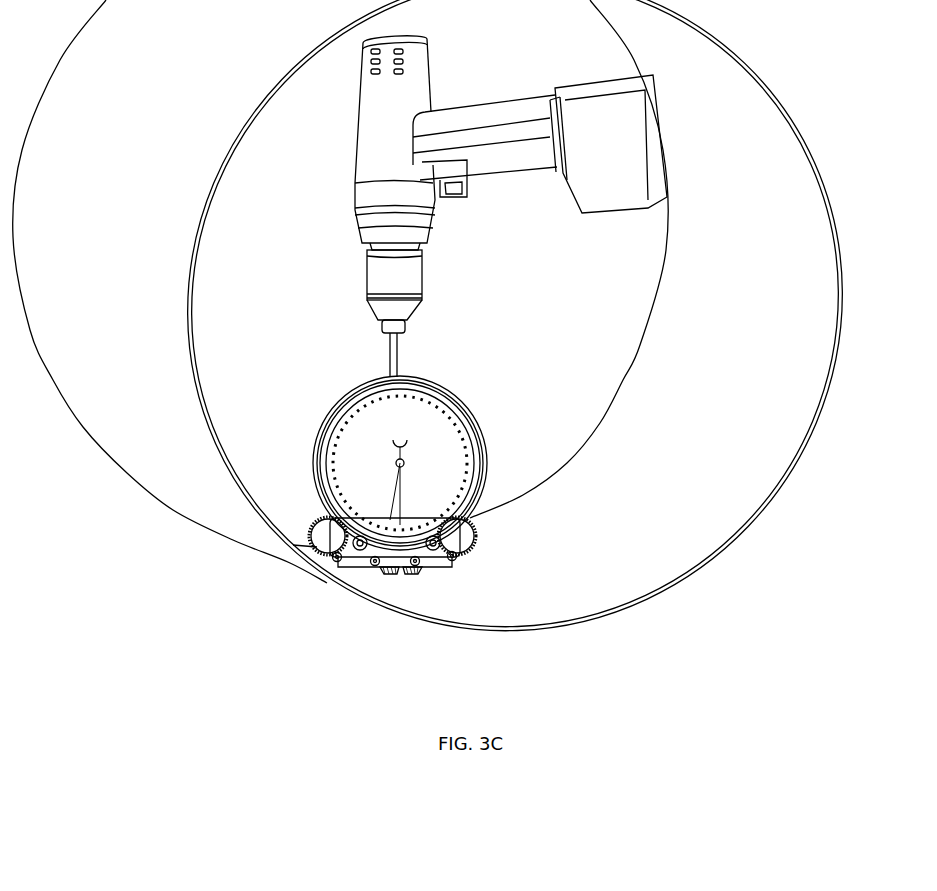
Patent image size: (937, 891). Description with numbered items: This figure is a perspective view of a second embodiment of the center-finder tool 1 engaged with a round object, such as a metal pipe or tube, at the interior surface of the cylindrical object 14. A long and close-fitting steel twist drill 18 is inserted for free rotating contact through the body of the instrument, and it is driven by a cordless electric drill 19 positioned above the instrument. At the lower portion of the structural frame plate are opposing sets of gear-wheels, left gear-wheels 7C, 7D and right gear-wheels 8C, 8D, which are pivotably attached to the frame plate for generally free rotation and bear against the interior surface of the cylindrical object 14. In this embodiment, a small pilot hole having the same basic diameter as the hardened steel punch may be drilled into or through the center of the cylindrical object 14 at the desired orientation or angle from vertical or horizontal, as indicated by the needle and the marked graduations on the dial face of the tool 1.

The tool 1 is at (470, 393).
The cylindrical object 14 is at (636, 346).
The steel twist drill 18 is at (385, 356).
The cordless electric drill 19 is at (350, 182).
The left gear-wheel 7C is at (328, 570).
The left gear-wheel 7D is at (380, 574).
The right gear-wheel 8C is at (467, 570).
The right gear-wheel 8D is at (411, 574).